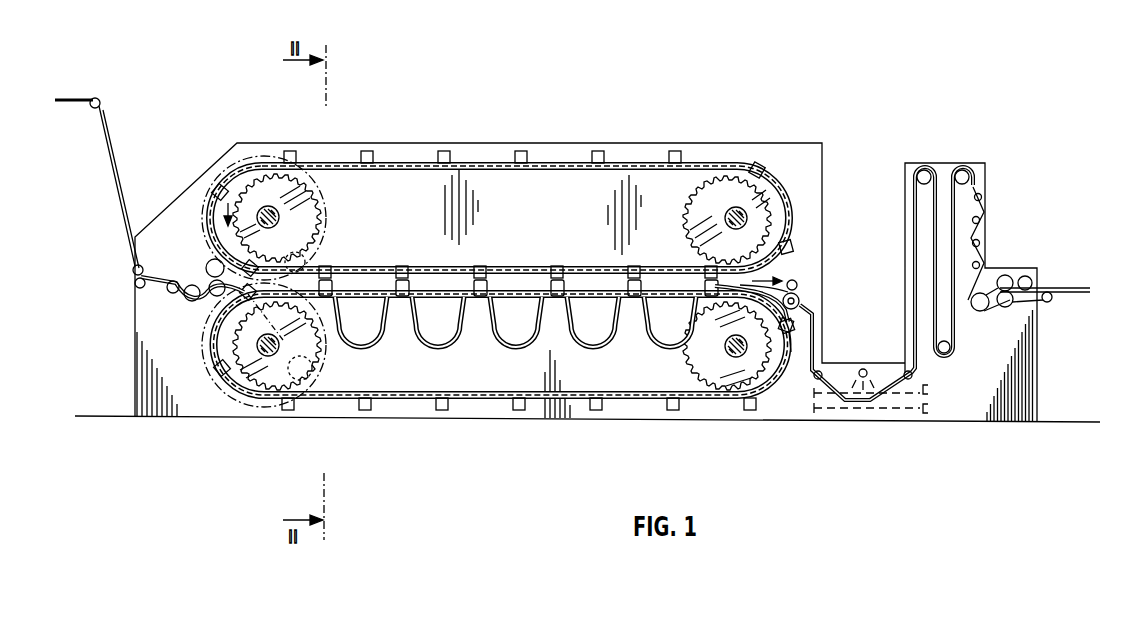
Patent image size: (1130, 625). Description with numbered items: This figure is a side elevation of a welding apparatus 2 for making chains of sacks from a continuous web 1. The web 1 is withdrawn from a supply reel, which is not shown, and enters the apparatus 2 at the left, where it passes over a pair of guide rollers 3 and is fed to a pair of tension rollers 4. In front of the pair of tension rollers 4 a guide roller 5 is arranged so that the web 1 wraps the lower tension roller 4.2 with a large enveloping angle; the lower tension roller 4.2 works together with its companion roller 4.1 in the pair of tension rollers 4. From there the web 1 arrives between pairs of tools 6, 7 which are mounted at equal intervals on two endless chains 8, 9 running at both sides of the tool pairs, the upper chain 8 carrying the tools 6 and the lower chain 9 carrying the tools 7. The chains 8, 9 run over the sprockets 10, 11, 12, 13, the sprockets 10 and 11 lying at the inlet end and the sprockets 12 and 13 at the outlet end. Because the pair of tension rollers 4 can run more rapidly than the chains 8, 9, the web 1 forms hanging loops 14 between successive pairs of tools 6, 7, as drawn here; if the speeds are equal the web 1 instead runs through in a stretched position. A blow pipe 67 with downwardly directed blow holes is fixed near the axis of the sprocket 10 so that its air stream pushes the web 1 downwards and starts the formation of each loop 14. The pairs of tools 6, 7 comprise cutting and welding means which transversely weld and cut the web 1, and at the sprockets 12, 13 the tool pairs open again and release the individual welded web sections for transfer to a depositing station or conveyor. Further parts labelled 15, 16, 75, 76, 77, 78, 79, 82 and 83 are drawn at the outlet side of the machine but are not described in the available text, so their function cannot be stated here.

The web 1 is at (122, 168).
The apparatus 2 is at (554, 74).
The pair of guide rollers 3 is at (141, 268).
The pair of tension rollers 4 is at (194, 246).
The upper feed roller 4.1 is at (210, 268).
The lower tension roller 4.2 is at (211, 297).
The guide roller 5 is at (187, 293).
The tool 6 is at (481, 268).
The tool 7 is at (480, 300).
The chain 8 is at (386, 268).
The chain 9 is at (385, 299).
The sprocket 10 is at (322, 220).
The sprocket 11 is at (320, 360).
The sprocket 12 is at (688, 214).
The sprocket 13 is at (690, 360).
The loops 14 is at (445, 347).
The transfer roller 15 is at (800, 292).
The treatment module 16 is at (937, 95).
The blow pipe 67 is at (289, 254).
The output roller 75 is at (1006, 308).
The guide roller 76 is at (989, 265).
The upper liquid level 77 is at (930, 391).
The lower liquid level 78 is at (930, 409).
The spray nozzle 79 is at (864, 368).
The guide chain segment 82 is at (763, 308).
The take-off roller 83 is at (806, 307).